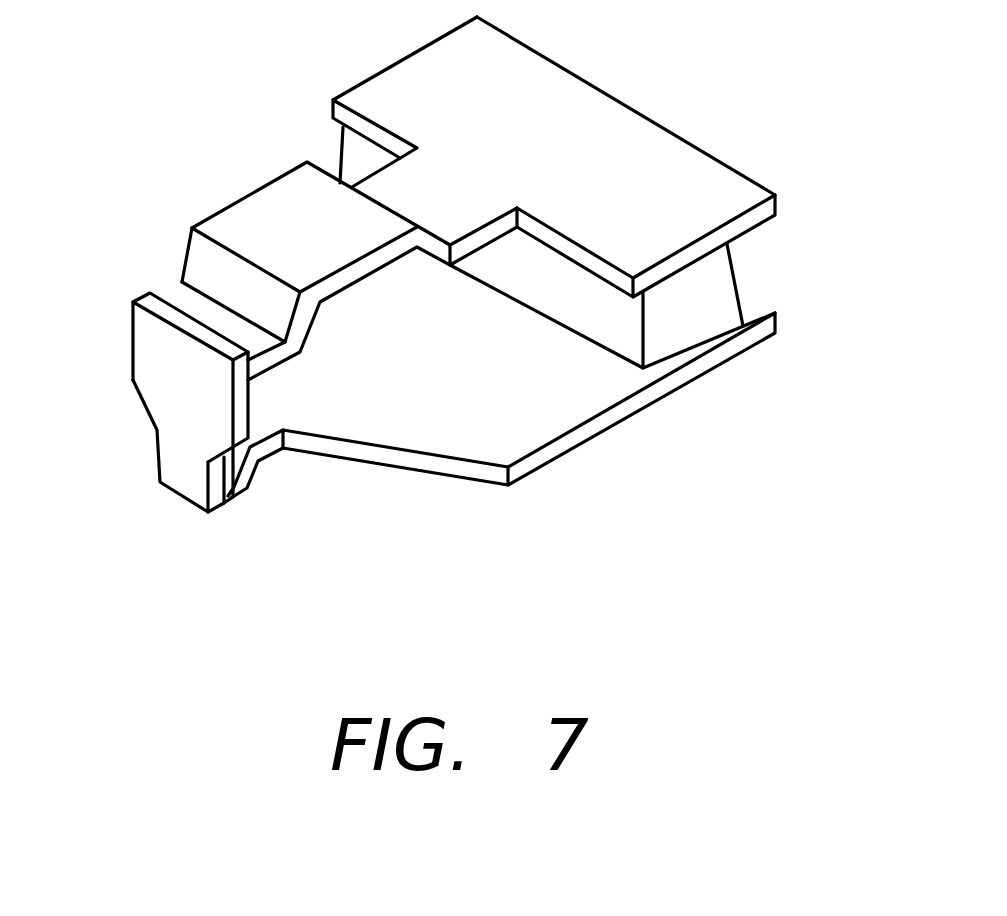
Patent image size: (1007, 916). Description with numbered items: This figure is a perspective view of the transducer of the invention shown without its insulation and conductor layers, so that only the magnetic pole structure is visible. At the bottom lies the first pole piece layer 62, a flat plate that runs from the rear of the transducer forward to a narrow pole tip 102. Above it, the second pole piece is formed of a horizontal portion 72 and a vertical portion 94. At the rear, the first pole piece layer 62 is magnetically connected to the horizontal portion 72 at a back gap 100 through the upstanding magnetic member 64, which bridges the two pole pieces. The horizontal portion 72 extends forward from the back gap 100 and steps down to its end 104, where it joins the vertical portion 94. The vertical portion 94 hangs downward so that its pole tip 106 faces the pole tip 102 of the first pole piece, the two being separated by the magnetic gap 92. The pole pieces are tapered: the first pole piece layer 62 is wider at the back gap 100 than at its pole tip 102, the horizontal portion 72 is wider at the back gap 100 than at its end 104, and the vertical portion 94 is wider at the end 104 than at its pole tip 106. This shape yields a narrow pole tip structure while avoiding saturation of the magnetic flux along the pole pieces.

The first pole piece layer 62 is at (432, 585).
The magnetic member 64 is at (713, 305).
The horizontal portion of the second pole piece 72 is at (272, 98).
The magnetic gap 92 is at (228, 499).
The vertical portion of the second pole piece 94 is at (60, 327).
The back gap 100 is at (827, 238).
The pole tip 102 is at (263, 452).
The end 104 is at (188, 297).
The pole tip 106 is at (182, 468).